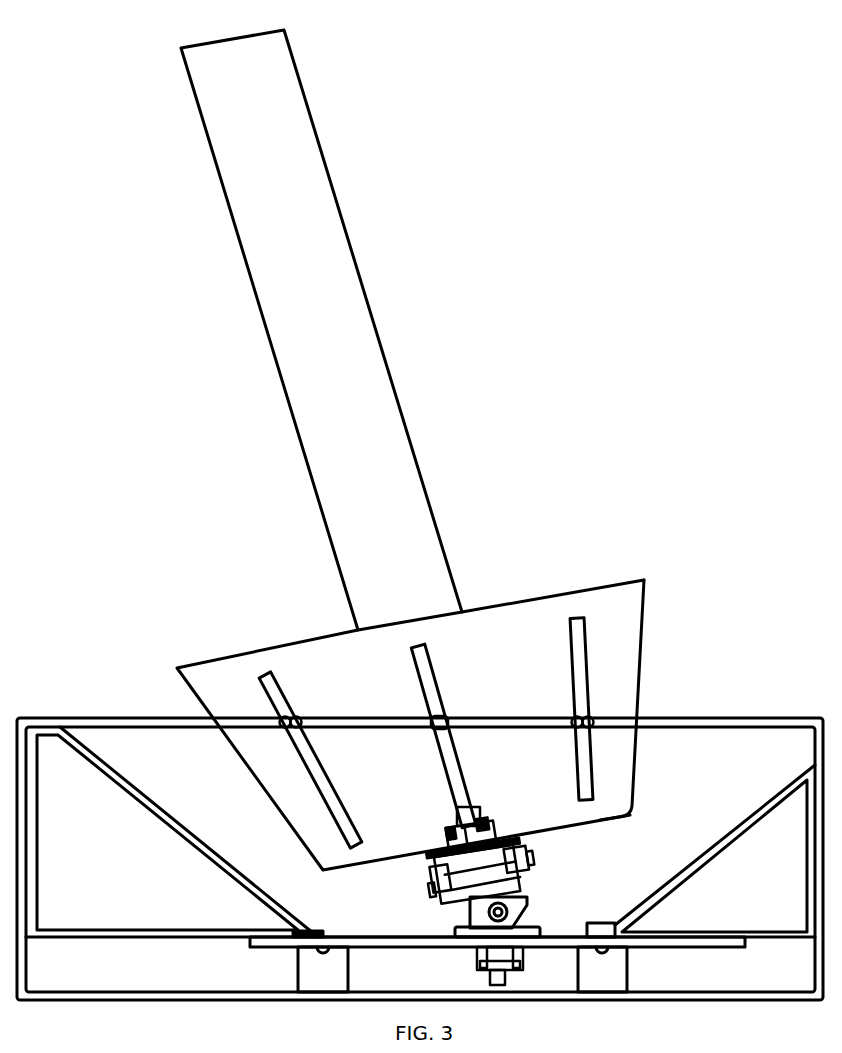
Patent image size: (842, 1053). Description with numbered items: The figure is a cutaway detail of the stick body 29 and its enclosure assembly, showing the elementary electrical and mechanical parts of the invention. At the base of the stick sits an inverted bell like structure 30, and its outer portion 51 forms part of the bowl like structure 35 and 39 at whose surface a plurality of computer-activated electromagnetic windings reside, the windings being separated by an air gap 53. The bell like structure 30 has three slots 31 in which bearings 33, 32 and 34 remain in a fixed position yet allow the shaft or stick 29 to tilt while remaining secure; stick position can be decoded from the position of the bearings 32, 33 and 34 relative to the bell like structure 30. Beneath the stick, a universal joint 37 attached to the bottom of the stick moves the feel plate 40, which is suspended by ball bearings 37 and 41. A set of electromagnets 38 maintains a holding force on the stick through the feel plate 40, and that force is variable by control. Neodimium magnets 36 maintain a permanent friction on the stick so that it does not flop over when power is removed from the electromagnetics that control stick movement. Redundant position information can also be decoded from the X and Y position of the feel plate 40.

The stick body 29 is at (247, 66).
The bell like structure at the base of the stick 30 is at (378, 633).
The slots 31 is at (435, 645).
The bearing 32 is at (427, 705).
The bearing 33 is at (277, 737).
The bearing 34 is at (599, 742).
The bowl like structure 35 is at (123, 897).
The neodimium magnets 36 is at (341, 915).
The ball bearings / universal joint 37 is at (296, 969).
The electromagnets 38 is at (597, 905).
The bowl like structure 39 is at (728, 857).
The feel plate 40 is at (389, 954).
The ball bearing 41 is at (632, 968).
The outer portion of the bell like structure 51 is at (624, 610).
The air gap 53 is at (147, 749).